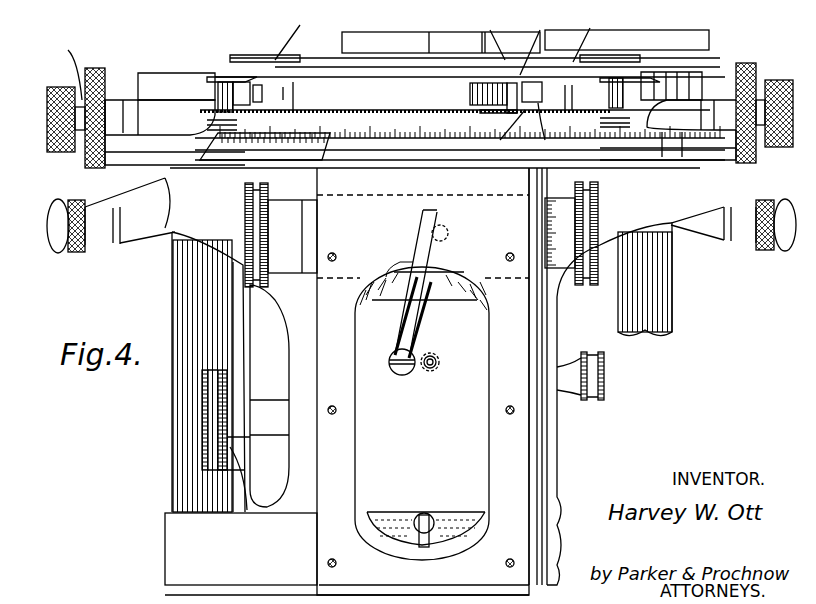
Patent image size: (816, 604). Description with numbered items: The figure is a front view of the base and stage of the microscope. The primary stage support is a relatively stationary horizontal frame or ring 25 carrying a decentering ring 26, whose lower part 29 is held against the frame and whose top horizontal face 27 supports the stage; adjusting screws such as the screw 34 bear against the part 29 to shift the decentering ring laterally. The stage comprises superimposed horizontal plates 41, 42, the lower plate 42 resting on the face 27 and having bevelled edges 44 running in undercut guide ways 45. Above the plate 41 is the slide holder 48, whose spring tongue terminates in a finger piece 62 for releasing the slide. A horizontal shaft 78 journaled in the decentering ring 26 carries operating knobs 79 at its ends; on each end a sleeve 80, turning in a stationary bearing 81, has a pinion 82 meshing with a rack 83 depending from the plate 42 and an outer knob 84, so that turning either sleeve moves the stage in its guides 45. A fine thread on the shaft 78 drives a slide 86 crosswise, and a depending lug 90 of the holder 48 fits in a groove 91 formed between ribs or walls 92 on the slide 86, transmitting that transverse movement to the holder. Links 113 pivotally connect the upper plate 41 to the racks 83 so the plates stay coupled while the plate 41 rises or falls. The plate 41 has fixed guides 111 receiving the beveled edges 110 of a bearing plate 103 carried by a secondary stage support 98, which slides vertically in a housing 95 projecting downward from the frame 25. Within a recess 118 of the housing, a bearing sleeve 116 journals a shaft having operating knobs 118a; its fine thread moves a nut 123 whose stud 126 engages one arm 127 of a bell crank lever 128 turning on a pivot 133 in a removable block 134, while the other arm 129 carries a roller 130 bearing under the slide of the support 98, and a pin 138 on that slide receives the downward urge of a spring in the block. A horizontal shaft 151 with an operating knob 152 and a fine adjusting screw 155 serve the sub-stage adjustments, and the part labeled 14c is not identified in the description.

The stand column 14c is at (694, 277).
The horizontal frame or ring 25 is at (218, 170).
The decentering ring 26 is at (95, 150).
The top horizontal face 27 is at (700, 55).
The decentering ring part 29 is at (620, 160).
The adjusting screw 34 is at (85, 245).
The upper stage plate 41 is at (255, 85).
The lower stage plate 42 is at (235, 82).
The bevelled edges 44 is at (225, 82).
The undercut guide ways 45 is at (213, 78).
The holder 48 is at (491, 31).
The finger piece 62 is at (342, 40).
The horizontal shaft 78 is at (382, 102).
The operating knobs 79 is at (58, 86).
The sleeve 80 is at (118, 98).
The stationary bearing 81 is at (420, 117).
The pinion 82 is at (225, 170).
The rack 83 is at (270, 55).
The operating knobs 84 is at (93, 68).
The slide 86 is at (472, 98).
The depending lug 90 is at (542, 132).
The groove 91 is at (497, 134).
The ribs or walls 92 is at (533, 82).
The housing 95 is at (529, 448).
The secondary stage support 98 is at (476, 296).
The bearing plate 103 is at (539, 38).
The beveled edges 110 is at (300, 80).
The fixed guides 111 is at (448, 31).
The link 113 is at (422, 97).
The bearing sleeve 116 is at (305, 225).
The recess or cavity 118 is at (392, 262).
The operating knob 118a is at (604, 210).
The slidable nut 123 is at (433, 262).
The stud 126 is at (449, 235).
The lever arm 127 is at (372, 292).
The bell crank lever 128 is at (420, 326).
The lever end 129 is at (430, 371).
The roller 130 is at (437, 362).
The pivot 133 is at (398, 375).
The removable block 134 is at (422, 413).
The pin 138 is at (422, 547).
The horizontal shaft 151 is at (265, 398).
The operating knob 152 is at (202, 400).
The fine adjusting screw 155 is at (604, 378).